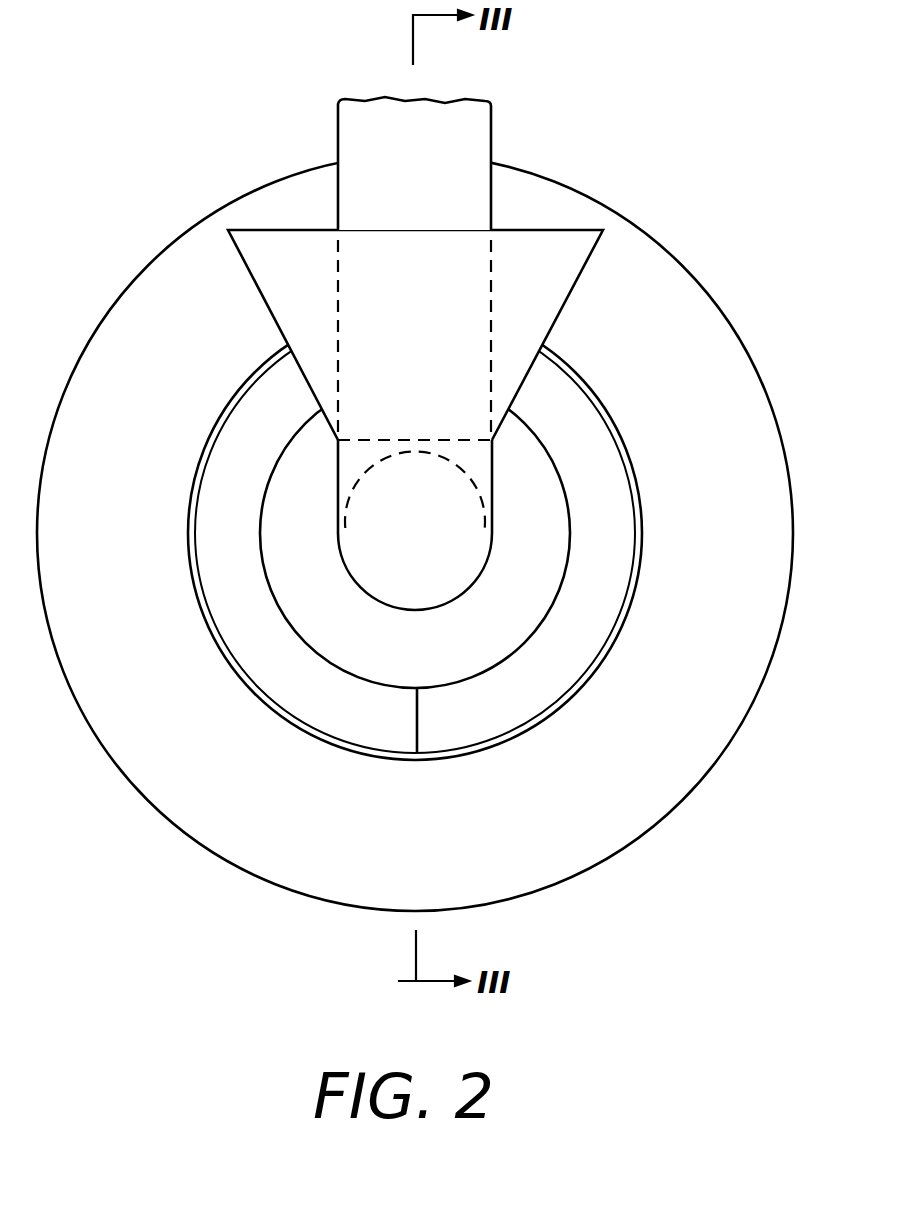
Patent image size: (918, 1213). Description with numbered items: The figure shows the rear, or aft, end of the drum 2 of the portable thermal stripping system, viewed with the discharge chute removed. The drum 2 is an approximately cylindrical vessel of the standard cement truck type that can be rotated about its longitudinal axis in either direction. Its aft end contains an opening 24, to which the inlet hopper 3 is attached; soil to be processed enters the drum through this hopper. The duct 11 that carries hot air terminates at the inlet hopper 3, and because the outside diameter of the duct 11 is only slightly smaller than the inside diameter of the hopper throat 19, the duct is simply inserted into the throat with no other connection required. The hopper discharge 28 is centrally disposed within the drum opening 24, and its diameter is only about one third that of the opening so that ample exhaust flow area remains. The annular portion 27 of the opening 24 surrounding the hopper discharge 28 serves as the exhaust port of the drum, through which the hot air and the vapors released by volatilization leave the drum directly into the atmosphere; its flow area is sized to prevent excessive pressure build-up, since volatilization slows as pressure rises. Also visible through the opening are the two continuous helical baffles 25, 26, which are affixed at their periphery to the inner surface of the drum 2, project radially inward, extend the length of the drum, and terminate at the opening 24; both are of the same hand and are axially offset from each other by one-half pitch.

The drum 2 is at (132, 277).
The inlet hopper 3 is at (568, 297).
The duct 11 is at (491, 122).
The hopper throat 19 is at (369, 593).
The opening 24 is at (270, 708).
The helical baffle 25 is at (262, 510).
The helical baffle 26 is at (556, 593).
The annular portion 27 is at (517, 623).
The hopper discharge 28 is at (478, 472).